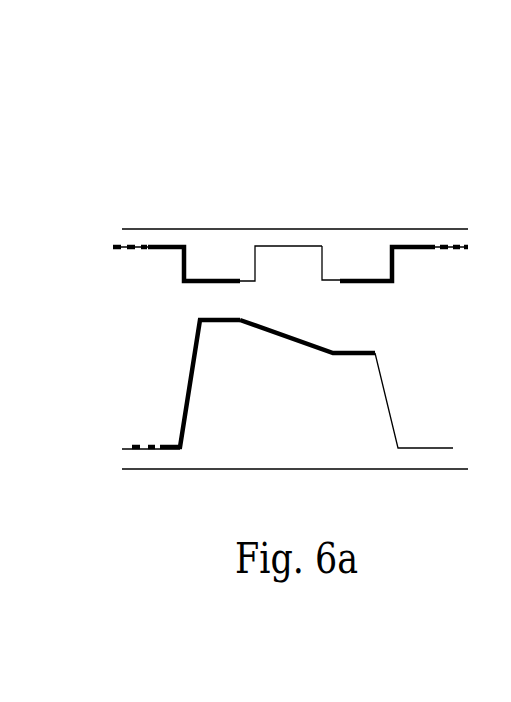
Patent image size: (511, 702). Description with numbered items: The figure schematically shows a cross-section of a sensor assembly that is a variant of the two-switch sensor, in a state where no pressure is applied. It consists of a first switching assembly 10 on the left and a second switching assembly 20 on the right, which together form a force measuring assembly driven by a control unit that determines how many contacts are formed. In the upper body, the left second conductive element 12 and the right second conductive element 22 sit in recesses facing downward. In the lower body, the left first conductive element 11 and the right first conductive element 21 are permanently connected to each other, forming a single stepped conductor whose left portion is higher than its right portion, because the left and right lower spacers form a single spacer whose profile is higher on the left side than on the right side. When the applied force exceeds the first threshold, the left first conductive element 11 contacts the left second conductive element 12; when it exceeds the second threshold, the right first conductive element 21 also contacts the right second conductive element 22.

The first switching assembly 10 is at (194, 212).
The second switching assembly 20 is at (366, 212).
The left second conductive element 12 is at (208, 284).
The right second conductive element 22 is at (372, 284).
The left first conductive element 11 is at (190, 378).
The right first conductive element 21 is at (376, 350).